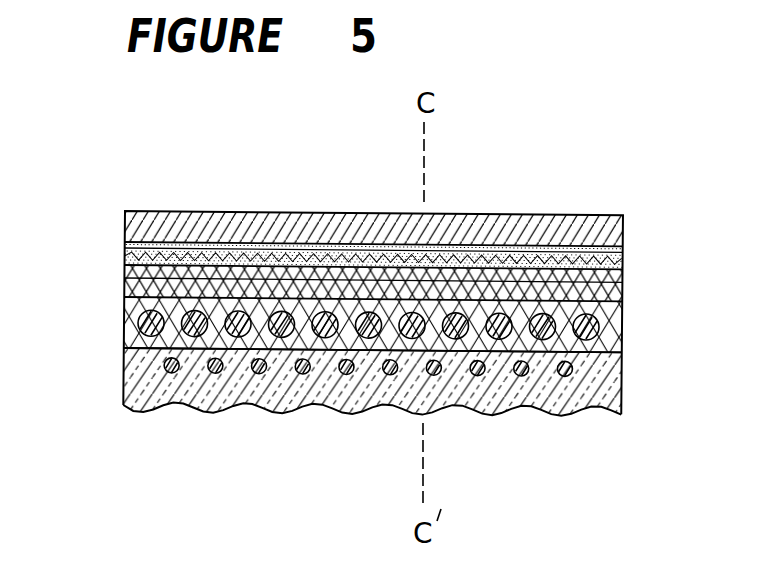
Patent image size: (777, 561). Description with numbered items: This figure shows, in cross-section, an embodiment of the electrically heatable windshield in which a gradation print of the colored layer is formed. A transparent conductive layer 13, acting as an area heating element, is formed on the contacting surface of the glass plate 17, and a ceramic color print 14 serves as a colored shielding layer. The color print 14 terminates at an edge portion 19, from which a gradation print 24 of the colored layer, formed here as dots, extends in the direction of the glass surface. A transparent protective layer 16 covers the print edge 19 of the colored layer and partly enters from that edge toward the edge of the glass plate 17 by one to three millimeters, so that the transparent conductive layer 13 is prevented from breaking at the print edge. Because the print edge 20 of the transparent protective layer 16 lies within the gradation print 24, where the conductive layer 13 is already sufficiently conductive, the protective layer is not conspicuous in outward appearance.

The transparent conductive layer 13 is at (325, 380).
The ceramic color print 14 is at (570, 216).
The transparent protective layer 16 is at (623, 312).
The glass plate 17 is at (287, 213).
The edge portion of the ceramic color print 19 is at (612, 266).
The print edge of the transparent protective layer 20 is at (624, 374).
The gradation print 24 is at (150, 318).